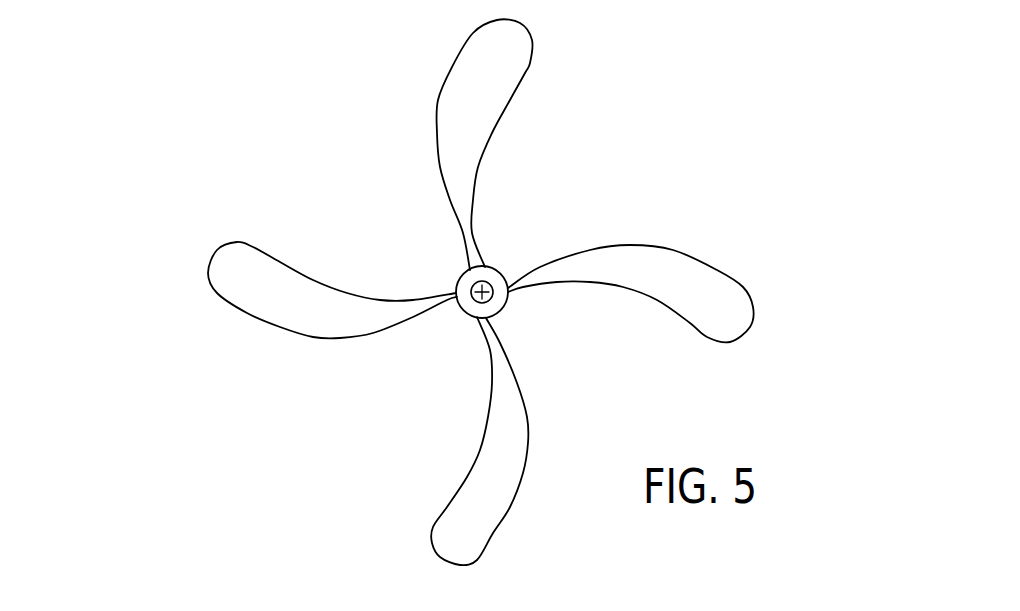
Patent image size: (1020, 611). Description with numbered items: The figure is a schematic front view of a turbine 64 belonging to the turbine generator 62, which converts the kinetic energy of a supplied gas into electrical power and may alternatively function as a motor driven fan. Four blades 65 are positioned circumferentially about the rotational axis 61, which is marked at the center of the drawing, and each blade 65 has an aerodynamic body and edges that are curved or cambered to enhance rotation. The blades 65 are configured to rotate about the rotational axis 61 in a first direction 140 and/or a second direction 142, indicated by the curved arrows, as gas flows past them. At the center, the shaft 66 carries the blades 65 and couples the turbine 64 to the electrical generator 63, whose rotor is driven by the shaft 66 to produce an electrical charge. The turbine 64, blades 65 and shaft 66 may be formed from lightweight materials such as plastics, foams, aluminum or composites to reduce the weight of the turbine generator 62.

The rotational axis 61 is at (485, 283).
The turbine generator 62 is at (242, 44).
The electrical generator 63 is at (462, 315).
The turbine 64 is at (649, 76).
The blades 65 is at (524, 26).
The shaft 66 is at (507, 300).
The first direction 140 is at (523, 167).
The second direction 142 is at (428, 413).